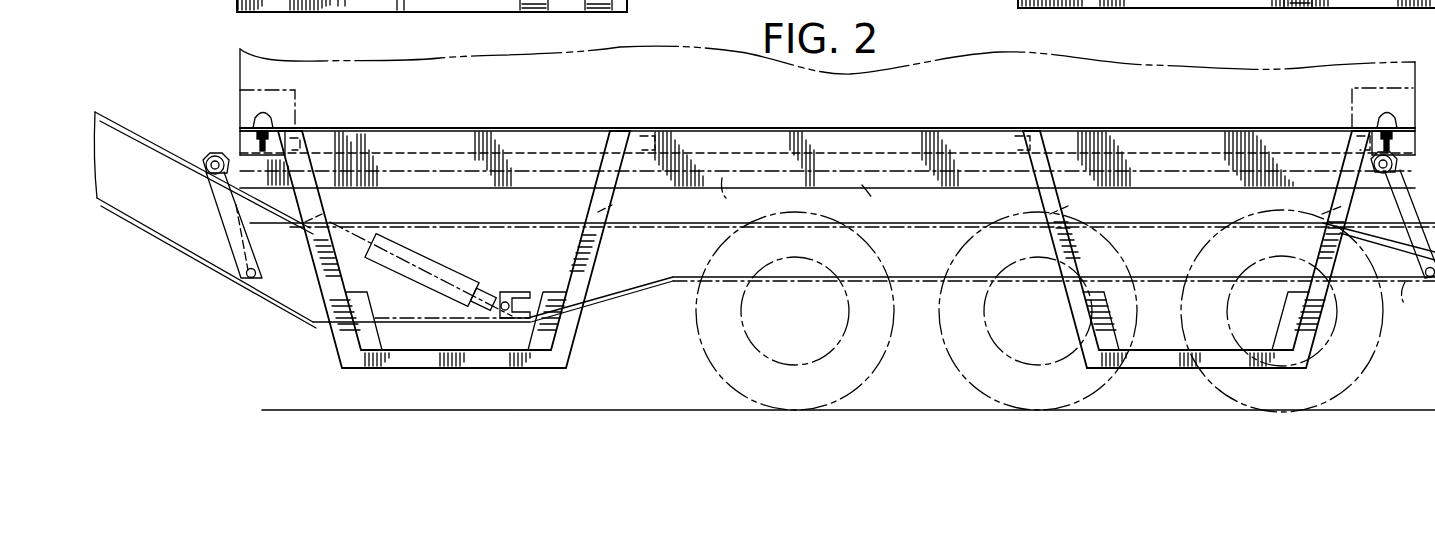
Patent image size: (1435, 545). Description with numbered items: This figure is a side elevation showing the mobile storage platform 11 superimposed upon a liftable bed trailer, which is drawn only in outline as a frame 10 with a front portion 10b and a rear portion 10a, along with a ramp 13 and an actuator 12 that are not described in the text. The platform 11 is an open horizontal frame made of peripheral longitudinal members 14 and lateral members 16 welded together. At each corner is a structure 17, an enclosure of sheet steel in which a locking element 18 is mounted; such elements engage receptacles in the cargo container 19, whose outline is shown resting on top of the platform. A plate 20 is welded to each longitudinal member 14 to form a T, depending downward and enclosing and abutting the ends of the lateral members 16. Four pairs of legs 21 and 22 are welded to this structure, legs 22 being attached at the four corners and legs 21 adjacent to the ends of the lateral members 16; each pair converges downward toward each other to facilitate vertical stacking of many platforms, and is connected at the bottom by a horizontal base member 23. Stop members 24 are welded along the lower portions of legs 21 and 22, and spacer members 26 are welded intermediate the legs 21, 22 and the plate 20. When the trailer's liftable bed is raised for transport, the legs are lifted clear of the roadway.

The trailer frame 10 is at (683, 284).
The rear portion of frame 10a is at (1416, 303).
The front portion of frame 10b is at (884, 201).
The mobile storage platform 11 is at (1168, 126).
The hydraulic cylinder 12 is at (468, 270).
The loading ramp 13 is at (216, 206).
The longitudinal member 14 is at (735, 198).
The lateral member 16 is at (298, 136).
The corner structure 17 is at (236, 144).
The locking element 18 is at (268, 2).
The cargo container 19 is at (1150, 62).
The plate 20 is at (892, 0).
The leg 21 is at (582, 270).
The leg 22 is at (332, 268).
The horizontal base member 23 is at (430, 355).
The stop member 24 is at (360, 308).
The spacer member 26 is at (325, 216).